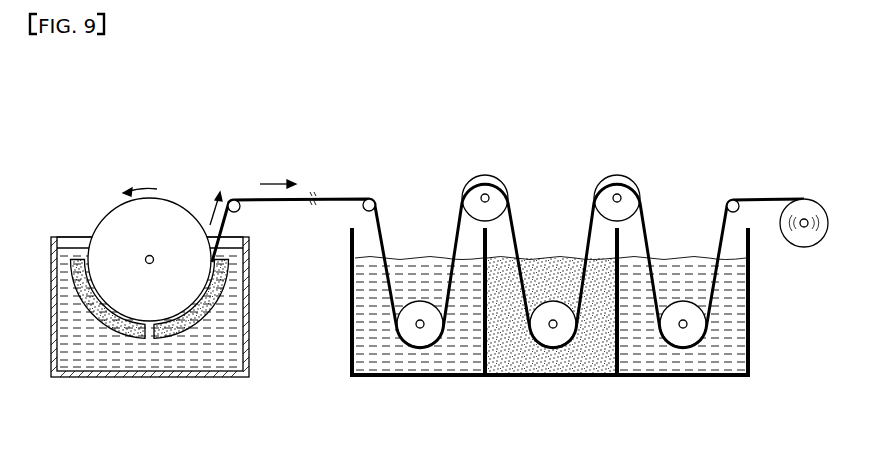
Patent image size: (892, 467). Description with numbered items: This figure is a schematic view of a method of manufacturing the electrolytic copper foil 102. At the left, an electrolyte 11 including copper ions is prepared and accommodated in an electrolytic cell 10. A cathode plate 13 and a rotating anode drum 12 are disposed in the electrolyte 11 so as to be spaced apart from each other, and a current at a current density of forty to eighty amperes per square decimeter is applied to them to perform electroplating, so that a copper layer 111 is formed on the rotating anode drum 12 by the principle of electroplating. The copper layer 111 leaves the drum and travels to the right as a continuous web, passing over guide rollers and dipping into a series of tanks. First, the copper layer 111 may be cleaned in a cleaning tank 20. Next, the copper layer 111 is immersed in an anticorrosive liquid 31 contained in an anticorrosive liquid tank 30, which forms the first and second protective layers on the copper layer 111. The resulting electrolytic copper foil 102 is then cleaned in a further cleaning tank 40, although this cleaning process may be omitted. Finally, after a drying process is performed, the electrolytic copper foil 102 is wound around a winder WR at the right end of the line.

The electrolytic cell 10 is at (157, 374).
The electrolyte 11 is at (223, 358).
The rotating anode drum 12 is at (102, 233).
The cathode plate 13 is at (117, 327).
The copper layer 111 is at (248, 193).
The cleaning tank 20 is at (415, 377).
The anticorrosive liquid tank 30 is at (551, 337).
The anticorrosive liquid 31 is at (602, 345).
The cleaning tank 40 is at (677, 378).
The electrolytic copper foil 102 is at (750, 193).
The winder WR is at (810, 210).